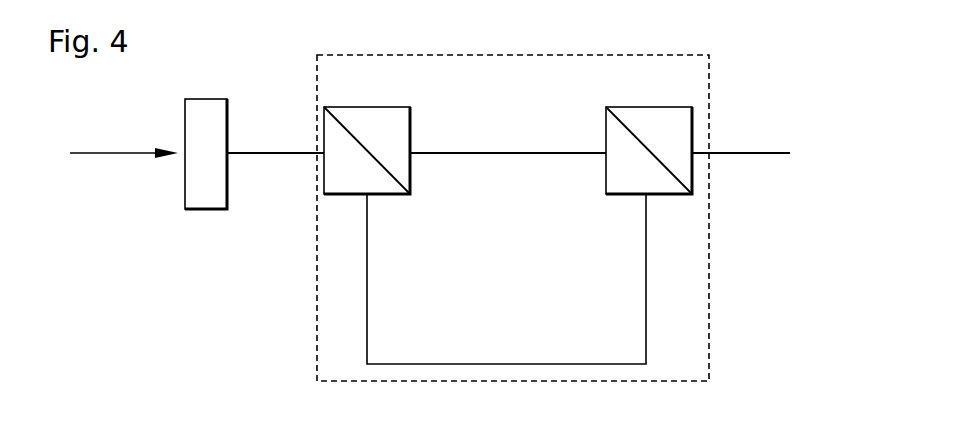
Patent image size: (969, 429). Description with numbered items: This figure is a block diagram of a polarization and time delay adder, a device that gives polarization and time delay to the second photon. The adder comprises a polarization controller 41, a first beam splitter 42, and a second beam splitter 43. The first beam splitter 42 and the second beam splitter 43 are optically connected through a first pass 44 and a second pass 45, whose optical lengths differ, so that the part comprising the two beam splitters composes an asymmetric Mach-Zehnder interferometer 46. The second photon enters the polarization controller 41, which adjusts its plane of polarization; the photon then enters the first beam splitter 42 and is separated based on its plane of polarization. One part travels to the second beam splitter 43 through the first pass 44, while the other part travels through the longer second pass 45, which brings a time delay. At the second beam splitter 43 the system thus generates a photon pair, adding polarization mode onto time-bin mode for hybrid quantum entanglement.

The polarization controller 41 is at (213, 133).
The first beam splitter 42 is at (389, 130).
The second beam splitter 43 is at (685, 140).
The first pass 44 is at (473, 158).
The second pass 45 is at (495, 363).
The asymmetric Mach-Zehnder interferometer 46 is at (712, 308).